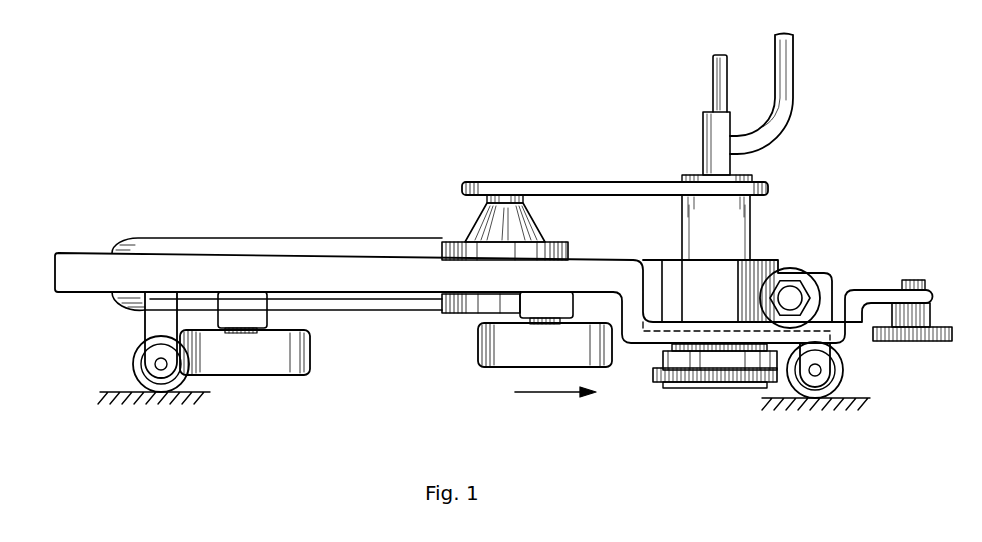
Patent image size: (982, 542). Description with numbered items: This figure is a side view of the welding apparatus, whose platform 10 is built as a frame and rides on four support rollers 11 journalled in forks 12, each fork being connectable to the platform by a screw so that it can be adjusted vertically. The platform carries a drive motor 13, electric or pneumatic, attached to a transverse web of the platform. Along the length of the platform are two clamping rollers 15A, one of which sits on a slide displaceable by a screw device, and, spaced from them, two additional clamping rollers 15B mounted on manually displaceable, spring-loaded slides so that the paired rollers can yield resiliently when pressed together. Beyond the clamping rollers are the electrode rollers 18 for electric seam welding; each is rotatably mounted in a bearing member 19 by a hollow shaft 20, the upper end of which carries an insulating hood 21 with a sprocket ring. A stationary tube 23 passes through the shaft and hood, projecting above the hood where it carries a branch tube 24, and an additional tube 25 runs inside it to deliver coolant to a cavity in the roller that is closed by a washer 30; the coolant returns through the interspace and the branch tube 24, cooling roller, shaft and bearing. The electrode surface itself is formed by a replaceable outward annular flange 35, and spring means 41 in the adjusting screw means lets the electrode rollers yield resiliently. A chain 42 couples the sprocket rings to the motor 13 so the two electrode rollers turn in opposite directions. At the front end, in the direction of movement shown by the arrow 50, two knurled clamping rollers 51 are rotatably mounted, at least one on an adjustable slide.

The platform 10 is at (263, 268).
The support rollers 11 is at (167, 388).
The forks 12 is at (150, 328).
The drive motor 13 is at (363, 247).
The clamping rollers 15A is at (265, 367).
The additional clamping rollers 15B is at (500, 352).
The electrode rollers 18 is at (662, 352).
The bearing member 19 is at (777, 267).
The hollow shaft 20 is at (655, 350).
The hood 21 is at (738, 235).
The tube 23 is at (722, 163).
The branch tube 24 is at (785, 70).
The additional tube 25 is at (713, 85).
The washer 30 is at (697, 388).
The annular flange 35 is at (730, 380).
The spring means 41 is at (800, 280).
The chain 42 is at (567, 188).
The arrow 50 is at (555, 405).
The clamping rollers 51 is at (925, 310).